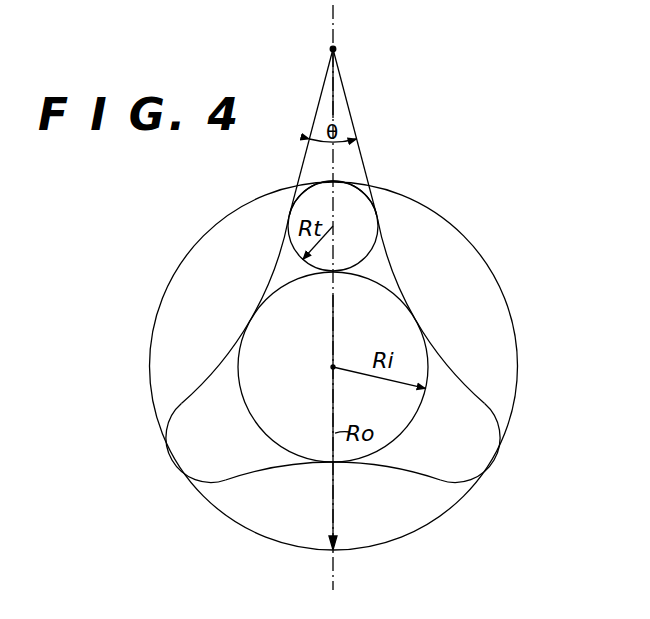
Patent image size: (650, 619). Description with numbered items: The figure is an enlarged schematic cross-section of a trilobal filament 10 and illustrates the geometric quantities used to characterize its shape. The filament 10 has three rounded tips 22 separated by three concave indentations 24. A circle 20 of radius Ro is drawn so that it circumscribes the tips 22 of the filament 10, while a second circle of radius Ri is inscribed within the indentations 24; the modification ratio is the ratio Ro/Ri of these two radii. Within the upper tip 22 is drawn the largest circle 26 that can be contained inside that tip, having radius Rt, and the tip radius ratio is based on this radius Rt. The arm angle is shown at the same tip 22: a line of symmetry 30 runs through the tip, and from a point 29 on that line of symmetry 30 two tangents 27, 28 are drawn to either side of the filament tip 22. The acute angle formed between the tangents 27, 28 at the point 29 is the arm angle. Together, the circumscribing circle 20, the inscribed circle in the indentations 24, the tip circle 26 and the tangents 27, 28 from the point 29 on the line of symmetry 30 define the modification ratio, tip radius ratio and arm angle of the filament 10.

The filament 10 is at (354, 349).
The circumscribing circle 20 is at (513, 323).
The tip 22 is at (378, 213).
The indentation 24 is at (253, 316).
The largest circle contained within a tip 26 is at (358, 187).
The tangent 27 is at (352, 113).
The tangent 28 is at (316, 114).
The point 29 is at (337, 51).
The line of symmetry 30 is at (335, 32).